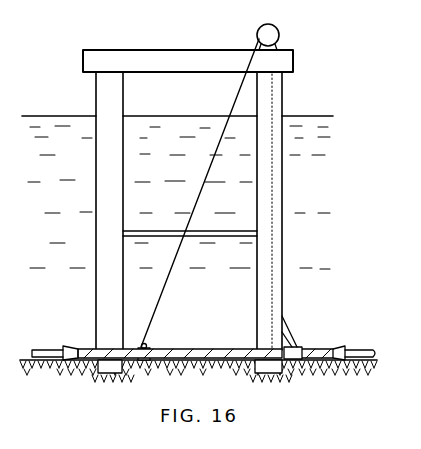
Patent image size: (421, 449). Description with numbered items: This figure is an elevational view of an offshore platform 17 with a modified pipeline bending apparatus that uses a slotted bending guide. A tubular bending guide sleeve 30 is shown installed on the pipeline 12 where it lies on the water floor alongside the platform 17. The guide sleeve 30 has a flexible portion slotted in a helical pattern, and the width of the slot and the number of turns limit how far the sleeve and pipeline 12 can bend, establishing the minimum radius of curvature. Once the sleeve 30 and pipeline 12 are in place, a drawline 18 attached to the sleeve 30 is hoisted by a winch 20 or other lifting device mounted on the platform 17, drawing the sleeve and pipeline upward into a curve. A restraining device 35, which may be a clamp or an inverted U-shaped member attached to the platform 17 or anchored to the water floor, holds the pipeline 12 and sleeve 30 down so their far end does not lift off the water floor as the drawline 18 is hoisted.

The pipeline 12 is at (362, 349).
The platform 17 is at (284, 178).
The drawline 18 is at (232, 101).
The winch 20 is at (279, 31).
The tubular bending guide sleeve 30 is at (185, 352).
The restraining device 35 is at (299, 347).